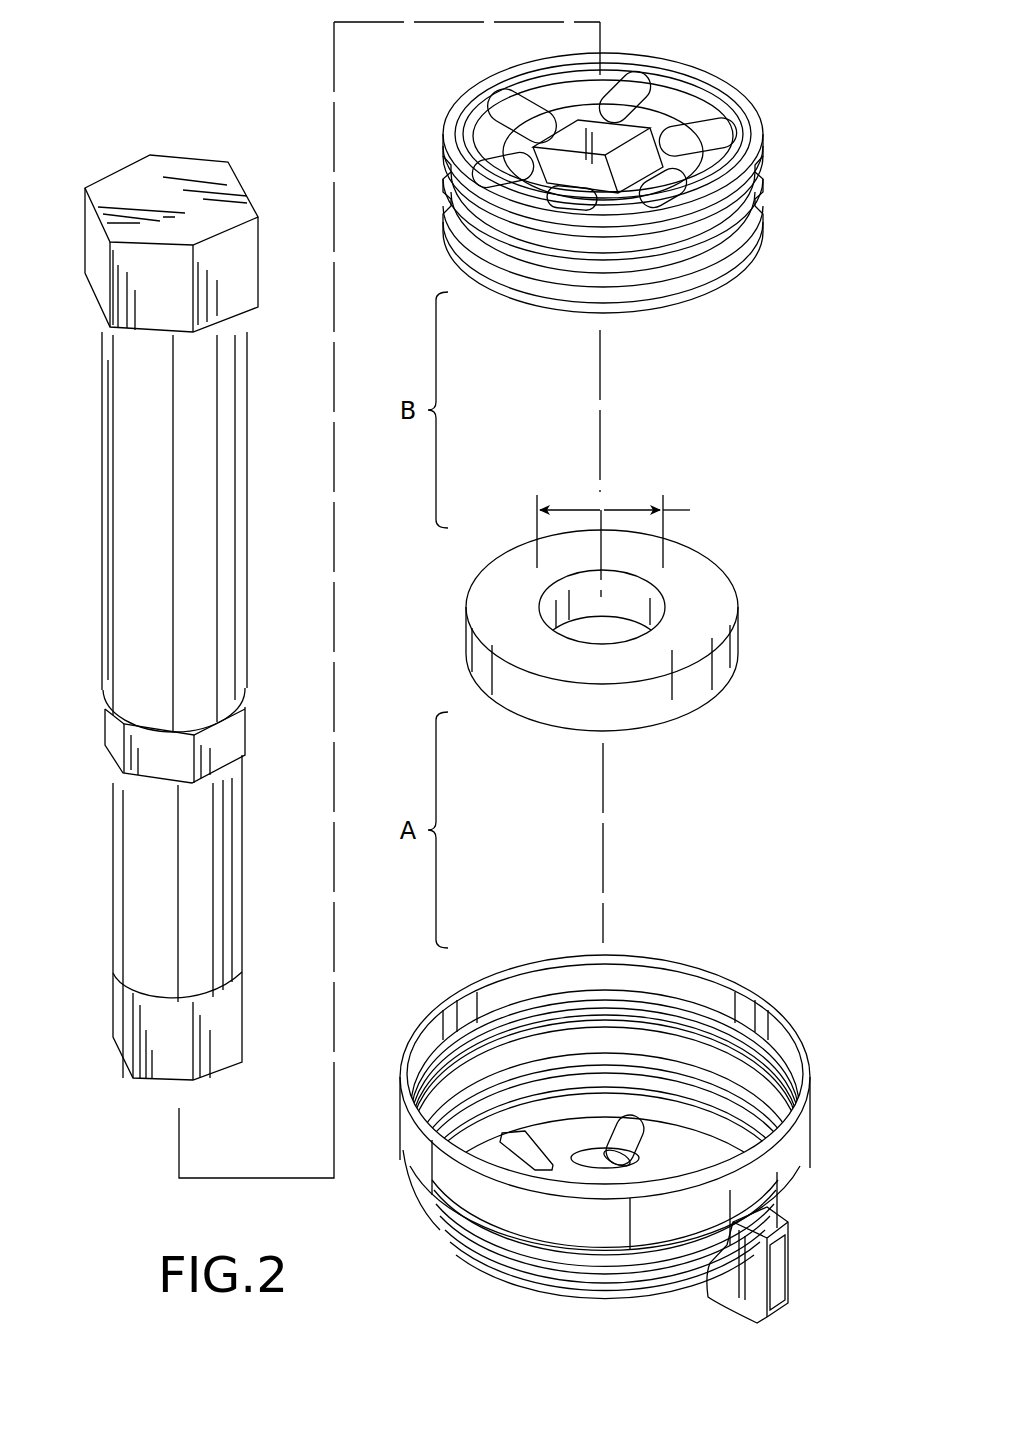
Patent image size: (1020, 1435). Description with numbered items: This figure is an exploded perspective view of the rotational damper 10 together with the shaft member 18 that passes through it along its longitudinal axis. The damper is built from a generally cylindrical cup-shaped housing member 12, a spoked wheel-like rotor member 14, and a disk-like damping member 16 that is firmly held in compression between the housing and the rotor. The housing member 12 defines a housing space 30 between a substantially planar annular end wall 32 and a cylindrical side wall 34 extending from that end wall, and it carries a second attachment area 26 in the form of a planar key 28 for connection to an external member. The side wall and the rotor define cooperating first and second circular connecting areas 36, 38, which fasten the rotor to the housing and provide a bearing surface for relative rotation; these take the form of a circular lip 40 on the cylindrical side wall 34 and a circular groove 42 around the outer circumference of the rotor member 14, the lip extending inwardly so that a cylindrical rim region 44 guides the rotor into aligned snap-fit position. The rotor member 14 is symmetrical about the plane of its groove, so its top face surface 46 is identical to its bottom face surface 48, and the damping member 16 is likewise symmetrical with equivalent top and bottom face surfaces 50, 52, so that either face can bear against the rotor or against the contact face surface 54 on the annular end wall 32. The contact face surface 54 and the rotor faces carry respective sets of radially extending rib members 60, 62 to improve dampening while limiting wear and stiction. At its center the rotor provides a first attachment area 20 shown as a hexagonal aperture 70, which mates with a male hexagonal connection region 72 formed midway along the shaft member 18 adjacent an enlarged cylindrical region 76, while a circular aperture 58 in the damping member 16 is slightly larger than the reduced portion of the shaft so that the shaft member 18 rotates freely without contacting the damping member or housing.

The rotational damper 10 is at (140, 1085).
The housing member 12 is at (600, 1127).
The rotor member 14 is at (574, 180).
The damping member 16 is at (604, 620).
The shaft member 18 is at (256, 483).
The first attachment area 20 is at (637, 150).
The second attachment area 26 is at (774, 1277).
The planar key 28 is at (778, 1257).
The housing space 30 is at (455, 1098).
The annular end wall 32 is at (668, 1150).
The cylindrical side wall 34 is at (786, 1155).
The first circular connecting area 36 is at (692, 1017).
The second circular connecting area 38 is at (434, 158).
The circular lip 40 is at (507, 1027).
The circular groove 42 is at (675, 265).
The cylindrical rim region 44 is at (657, 983).
The top face surface 46 is at (644, 78).
The bottom face surface 48 is at (535, 312).
The top face surface 50 is at (706, 590).
The bottom face surface 52 is at (695, 717).
The contact face surface 54 is at (551, 1145).
The circular aperture 58 is at (566, 598).
The rib members 60 is at (650, 1105).
The rib members 62 is at (620, 70).
The hexagonal aperture 70 is at (573, 133).
The hexagonal connection region 72 is at (228, 734).
The enlarged cylindrical region 76 is at (147, 521).